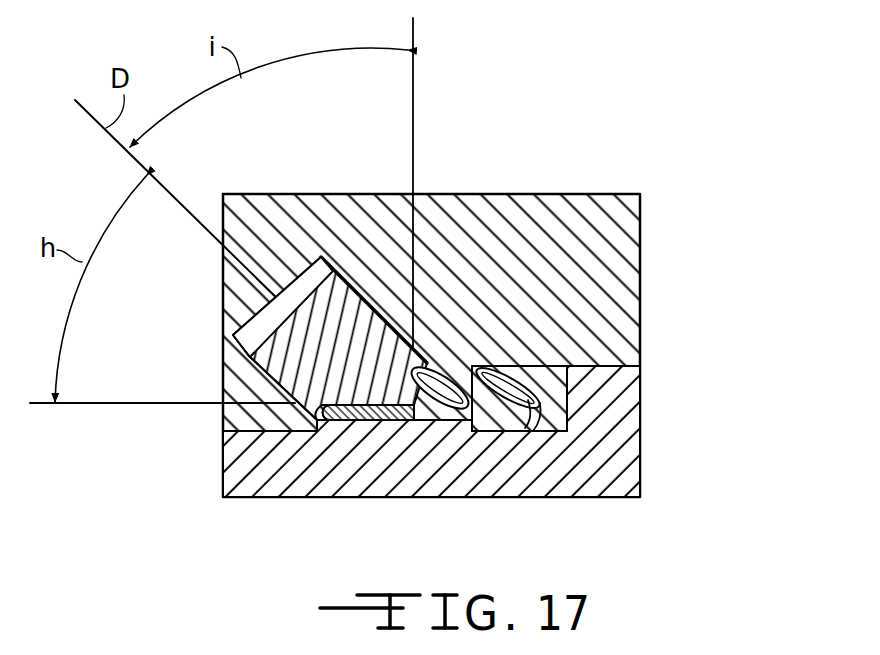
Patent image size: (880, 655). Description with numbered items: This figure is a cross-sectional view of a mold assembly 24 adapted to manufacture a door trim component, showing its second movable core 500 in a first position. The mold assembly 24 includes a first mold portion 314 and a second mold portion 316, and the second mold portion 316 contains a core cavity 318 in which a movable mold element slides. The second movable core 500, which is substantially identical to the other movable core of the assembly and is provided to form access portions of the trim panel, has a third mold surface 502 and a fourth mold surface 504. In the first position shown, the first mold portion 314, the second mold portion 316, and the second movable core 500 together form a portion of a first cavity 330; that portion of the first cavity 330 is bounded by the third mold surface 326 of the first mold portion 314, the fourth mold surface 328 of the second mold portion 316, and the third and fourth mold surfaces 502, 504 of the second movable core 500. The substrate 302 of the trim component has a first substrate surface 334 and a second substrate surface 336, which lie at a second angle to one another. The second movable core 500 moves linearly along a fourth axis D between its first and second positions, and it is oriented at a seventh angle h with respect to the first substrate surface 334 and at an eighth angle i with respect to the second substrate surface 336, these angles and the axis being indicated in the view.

The mold assembly 24 is at (722, 250).
The second mold portion 316 is at (613, 312).
The first mold portion 314 is at (604, 477).
The fourth mold surface 328 is at (533, 395).
The core cavity 318 is at (358, 310).
The first substrate surface 334 is at (347, 398).
The third mold surface 326 is at (407, 420).
The third mold surface 502 is at (348, 420).
The second substrate surface 336 is at (443, 371).
The first cavity 330 is at (503, 362).
The substrate 302 is at (418, 420).
The fourth mold surface 504 is at (447, 407).
The second movable core 500 is at (222, 460).